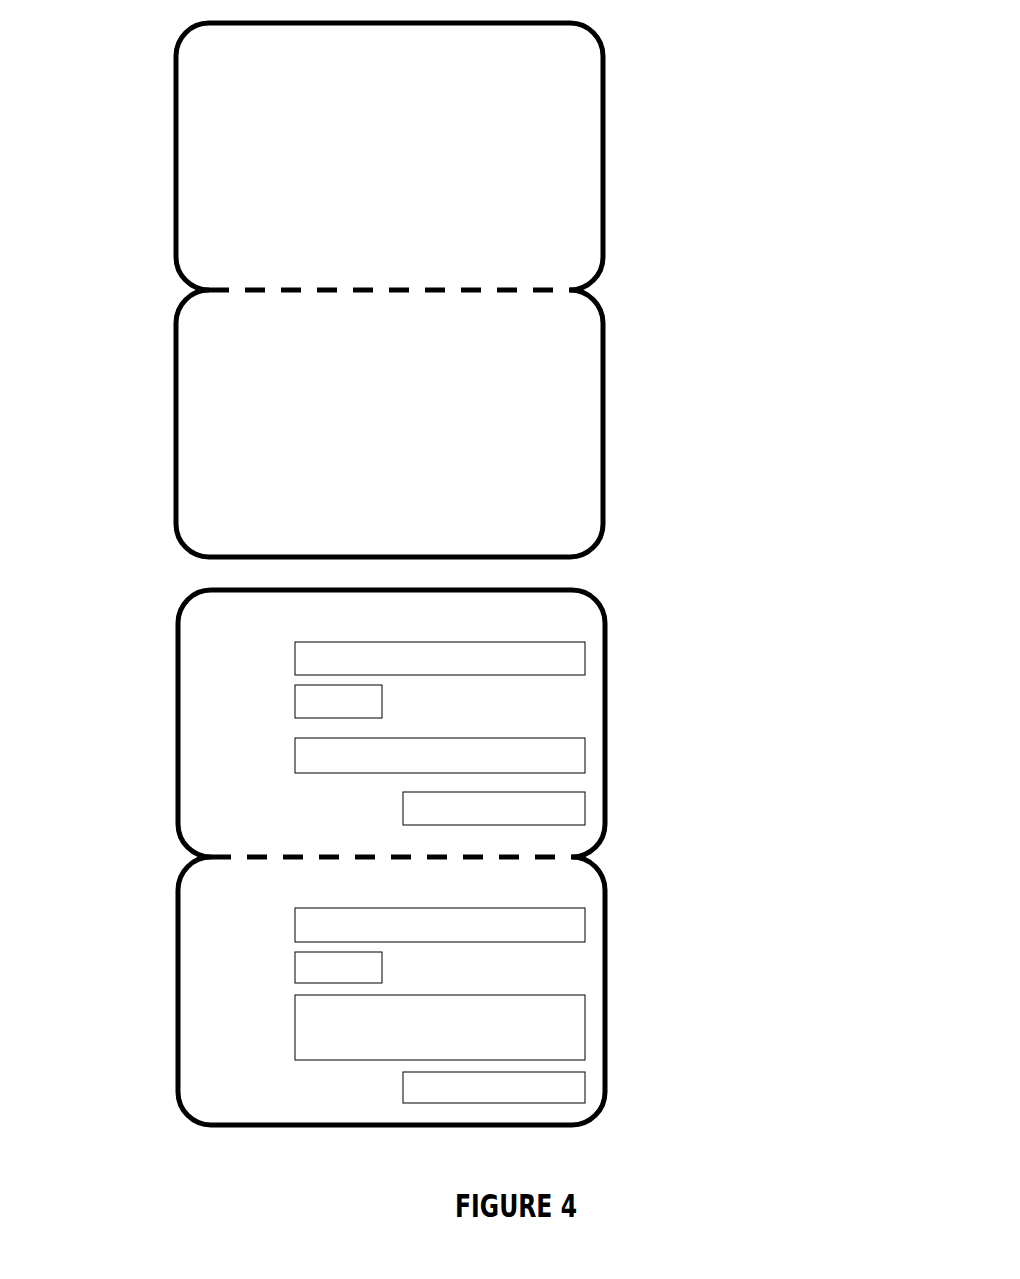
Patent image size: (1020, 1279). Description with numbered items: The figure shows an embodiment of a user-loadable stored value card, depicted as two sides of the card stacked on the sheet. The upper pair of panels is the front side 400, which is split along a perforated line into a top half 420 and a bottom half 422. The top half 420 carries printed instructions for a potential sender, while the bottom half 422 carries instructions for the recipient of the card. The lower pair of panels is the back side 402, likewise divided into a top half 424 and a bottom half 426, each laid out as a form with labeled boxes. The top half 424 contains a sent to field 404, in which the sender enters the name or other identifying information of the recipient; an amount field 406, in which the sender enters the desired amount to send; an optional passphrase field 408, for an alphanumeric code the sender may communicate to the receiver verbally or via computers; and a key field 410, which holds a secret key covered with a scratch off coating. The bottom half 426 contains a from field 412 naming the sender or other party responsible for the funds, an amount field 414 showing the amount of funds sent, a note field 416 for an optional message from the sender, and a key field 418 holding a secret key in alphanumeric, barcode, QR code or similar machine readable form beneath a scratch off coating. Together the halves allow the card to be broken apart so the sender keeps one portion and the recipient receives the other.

The front side 400 is at (132, 214).
The back side 402 is at (105, 853).
The top half 420 is at (568, 162).
The bottom half 422 is at (573, 432).
The top half 424 is at (195, 688).
The bottom half 426 is at (195, 1017).
The sent to field 404 is at (543, 662).
The amount field 406 is at (363, 702).
The optional passphrase field 408 is at (568, 760).
The key field 410 is at (543, 817).
The from field 412 is at (542, 932).
The amount field 414 is at (363, 972).
The note field 416 is at (568, 1027).
The key field 418 is at (543, 1087).